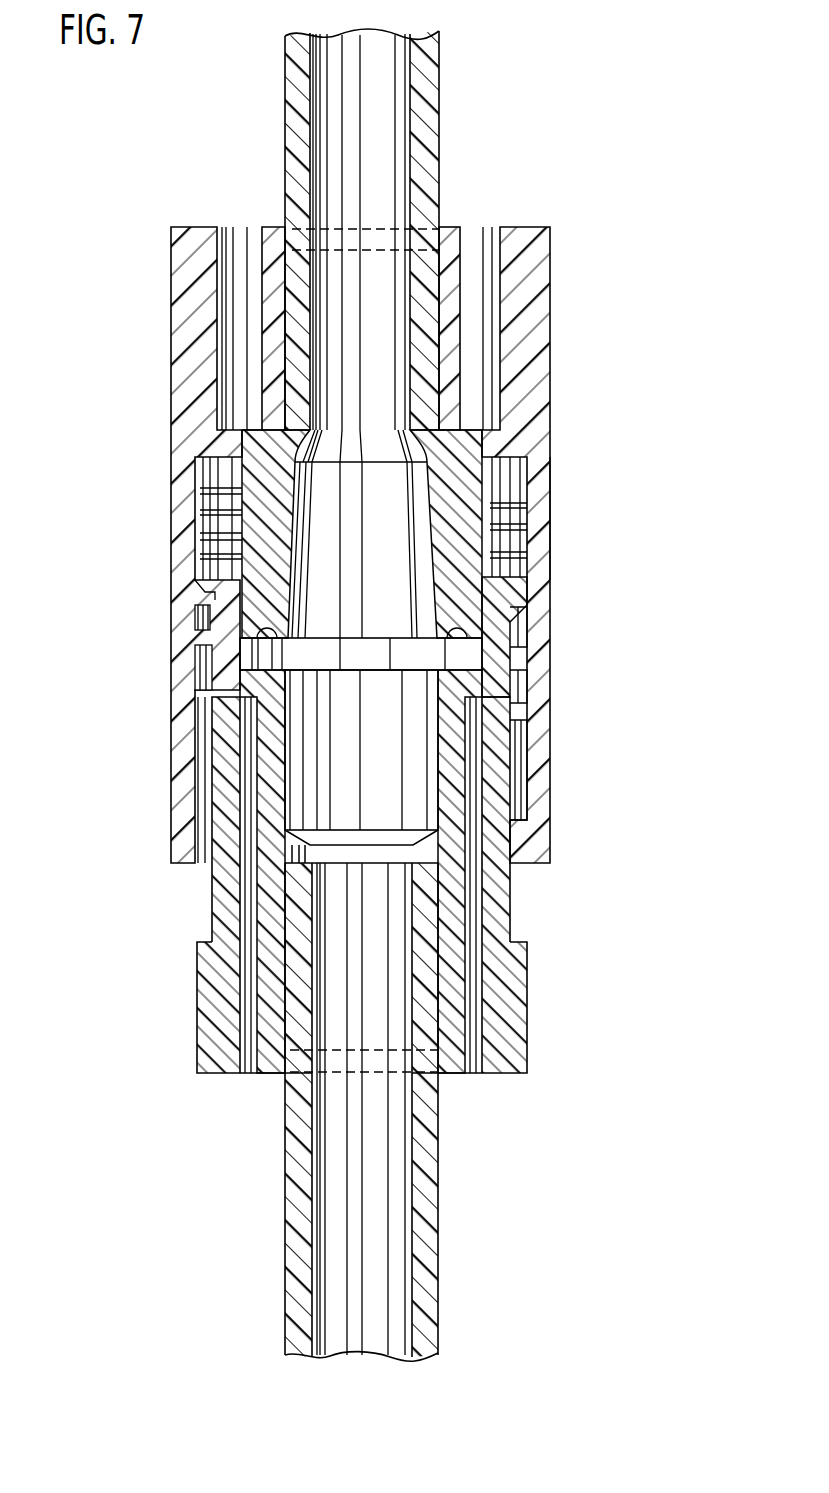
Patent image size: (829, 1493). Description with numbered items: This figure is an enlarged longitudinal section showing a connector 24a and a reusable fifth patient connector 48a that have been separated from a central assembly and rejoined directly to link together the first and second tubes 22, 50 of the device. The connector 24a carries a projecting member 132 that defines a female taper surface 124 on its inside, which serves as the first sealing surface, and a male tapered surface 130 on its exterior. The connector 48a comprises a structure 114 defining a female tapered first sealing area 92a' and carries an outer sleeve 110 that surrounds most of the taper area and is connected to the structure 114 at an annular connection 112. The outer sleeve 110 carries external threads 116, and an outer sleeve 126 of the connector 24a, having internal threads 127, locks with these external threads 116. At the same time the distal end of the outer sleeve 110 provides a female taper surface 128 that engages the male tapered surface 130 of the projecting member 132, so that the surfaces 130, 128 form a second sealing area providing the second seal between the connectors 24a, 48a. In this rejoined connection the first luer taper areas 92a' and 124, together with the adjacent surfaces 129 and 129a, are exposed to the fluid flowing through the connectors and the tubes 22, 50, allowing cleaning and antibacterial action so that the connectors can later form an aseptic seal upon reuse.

The first tube 22 is at (427, 168).
The connector 24a is at (552, 373).
The female taper surface 124 is at (297, 510).
The projecting member 132 is at (258, 488).
The male tapered surface 130 is at (258, 510).
The female taper surface 128 is at (215, 596).
The internal threads 127 is at (522, 517).
The outer sleeve 126 is at (540, 558).
The adjacent surface 129 is at (470, 640).
The external threads 116 is at (498, 658).
The annular connection 112 is at (465, 695).
The adjacent surface 129a is at (478, 725).
The structure 114 is at (462, 772).
The female tapered first sealing area 92a' is at (456, 885).
The outer sleeve 110 is at (510, 918).
The fifth patient connector 48a is at (527, 1001).
The second tube 50 is at (432, 1200).